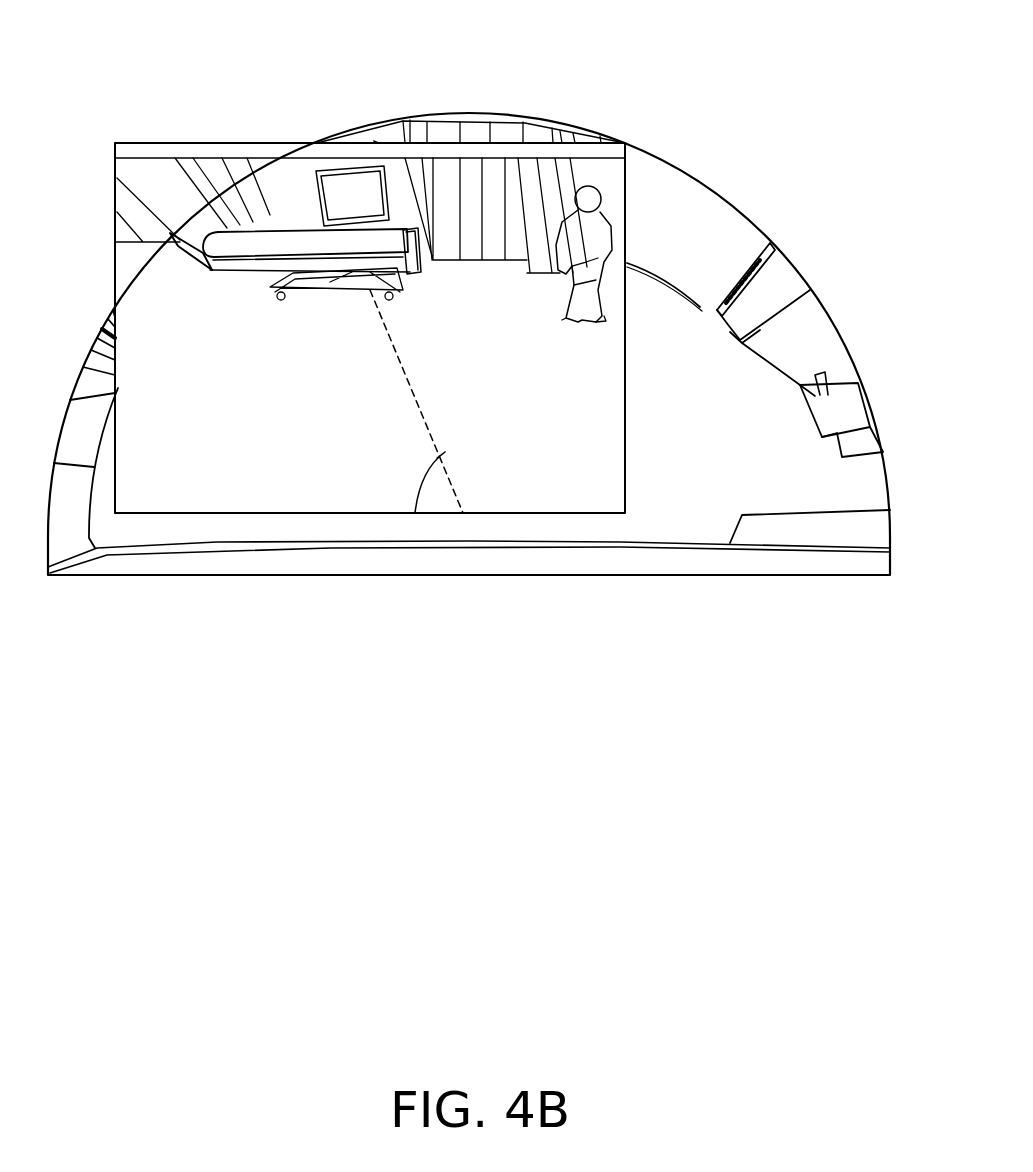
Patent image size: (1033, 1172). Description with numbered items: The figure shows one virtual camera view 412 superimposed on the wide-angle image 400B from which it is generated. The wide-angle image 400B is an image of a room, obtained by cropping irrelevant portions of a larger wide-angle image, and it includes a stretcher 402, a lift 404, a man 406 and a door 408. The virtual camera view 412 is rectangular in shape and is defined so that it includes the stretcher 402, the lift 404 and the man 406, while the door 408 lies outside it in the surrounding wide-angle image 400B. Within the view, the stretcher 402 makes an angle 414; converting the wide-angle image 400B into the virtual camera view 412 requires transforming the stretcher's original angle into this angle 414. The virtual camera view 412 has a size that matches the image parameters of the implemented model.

The wide-angle image 400B is at (800, 580).
The stretcher 402 is at (293, 247).
The lift 404 is at (520, 207).
The man 406 is at (593, 218).
The door 408 is at (767, 272).
The virtual camera view 412 is at (247, 513).
The angle 414 is at (437, 497).